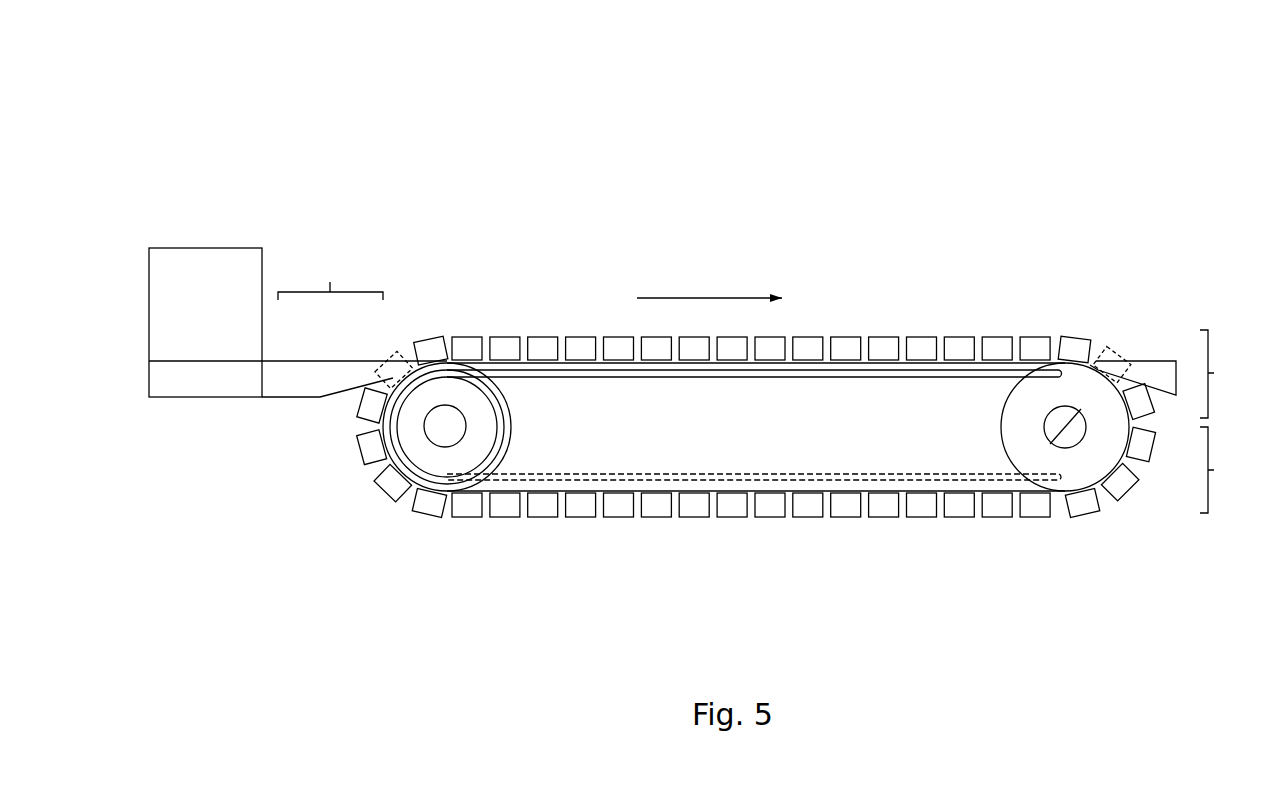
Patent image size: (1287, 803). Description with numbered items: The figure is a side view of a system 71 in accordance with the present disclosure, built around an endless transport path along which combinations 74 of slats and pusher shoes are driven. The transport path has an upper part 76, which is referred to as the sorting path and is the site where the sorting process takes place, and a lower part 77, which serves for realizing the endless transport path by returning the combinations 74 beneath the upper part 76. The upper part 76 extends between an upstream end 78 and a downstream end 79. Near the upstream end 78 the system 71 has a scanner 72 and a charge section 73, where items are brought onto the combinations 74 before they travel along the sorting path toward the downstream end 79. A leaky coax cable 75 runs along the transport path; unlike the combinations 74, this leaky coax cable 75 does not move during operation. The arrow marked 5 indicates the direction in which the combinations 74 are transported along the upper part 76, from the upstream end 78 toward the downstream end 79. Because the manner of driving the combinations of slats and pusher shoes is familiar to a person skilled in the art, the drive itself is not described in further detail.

The system 71 is at (1013, 138).
The scanner 72 is at (190, 260).
The charge section 73 is at (298, 303).
The combinations 74 is at (503, 342).
The leaky coax cable 75 is at (918, 377).
The upper part 76 is at (1226, 374).
The lower part 77 is at (1225, 470).
The upstream end 78 is at (450, 283).
The downstream end 79 is at (1103, 287).
The transport direction 5 is at (709, 269).